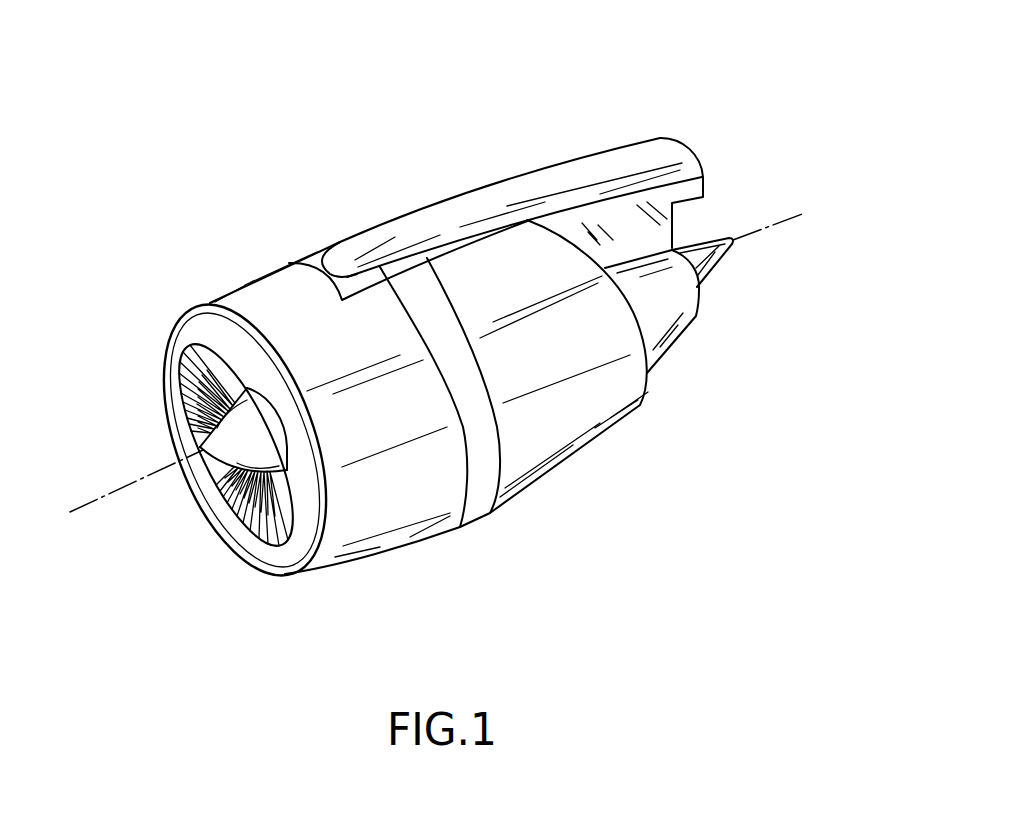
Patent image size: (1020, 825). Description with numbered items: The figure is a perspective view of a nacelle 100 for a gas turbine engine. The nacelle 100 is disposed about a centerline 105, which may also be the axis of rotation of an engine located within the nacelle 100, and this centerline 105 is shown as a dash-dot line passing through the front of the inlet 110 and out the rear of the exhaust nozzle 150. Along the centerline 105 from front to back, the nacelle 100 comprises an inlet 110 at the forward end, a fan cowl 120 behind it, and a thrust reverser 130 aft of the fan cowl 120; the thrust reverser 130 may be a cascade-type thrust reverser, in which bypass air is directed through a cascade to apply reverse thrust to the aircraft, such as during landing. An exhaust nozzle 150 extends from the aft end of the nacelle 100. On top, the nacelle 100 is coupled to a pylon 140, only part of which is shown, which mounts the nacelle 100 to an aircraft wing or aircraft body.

The nacelle 100 is at (180, 150).
The centerline 105 is at (132, 487).
The inlet 110 is at (277, 574).
The fan cowl 120 is at (393, 550).
The thrust reverser 130 is at (547, 478).
The pylon 140 is at (555, 163).
The exhaust nozzle 150 is at (667, 347).